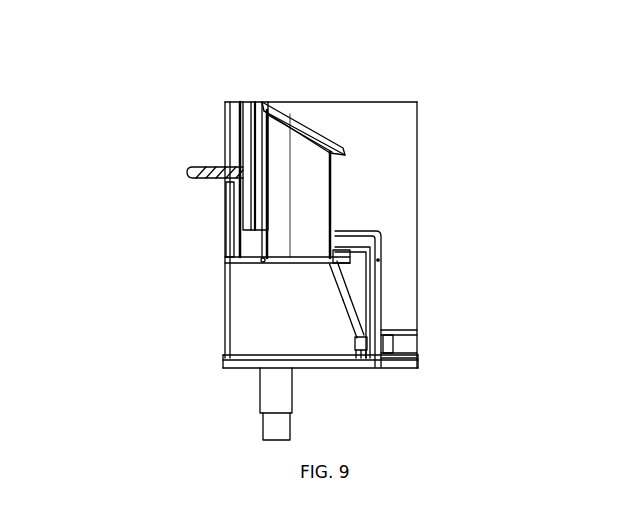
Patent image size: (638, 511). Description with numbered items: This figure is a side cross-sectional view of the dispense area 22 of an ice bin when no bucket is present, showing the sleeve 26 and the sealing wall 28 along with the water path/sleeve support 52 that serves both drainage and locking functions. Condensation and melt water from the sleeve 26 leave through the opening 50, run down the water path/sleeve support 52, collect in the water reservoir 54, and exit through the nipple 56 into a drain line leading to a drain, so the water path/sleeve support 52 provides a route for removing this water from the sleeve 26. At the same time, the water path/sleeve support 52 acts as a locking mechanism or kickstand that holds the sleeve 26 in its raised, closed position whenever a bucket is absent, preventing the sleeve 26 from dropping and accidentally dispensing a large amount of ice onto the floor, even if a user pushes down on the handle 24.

The dispense area 22 is at (188, 302).
The handle 24 is at (178, 167).
The sleeve 26 is at (340, 178).
The sealing wall 28 is at (327, 127).
The opening 50 is at (327, 266).
The water path/sleeve support 52 is at (327, 291).
The water reservoir 54 is at (343, 339).
The nipple 56 is at (355, 366).